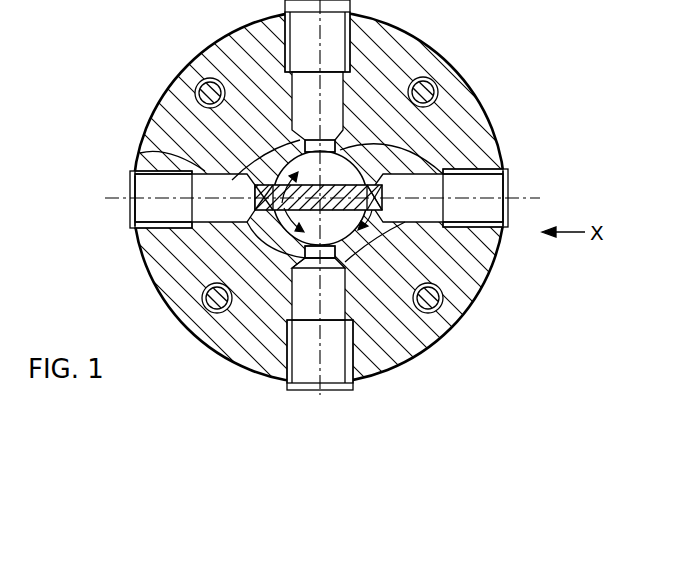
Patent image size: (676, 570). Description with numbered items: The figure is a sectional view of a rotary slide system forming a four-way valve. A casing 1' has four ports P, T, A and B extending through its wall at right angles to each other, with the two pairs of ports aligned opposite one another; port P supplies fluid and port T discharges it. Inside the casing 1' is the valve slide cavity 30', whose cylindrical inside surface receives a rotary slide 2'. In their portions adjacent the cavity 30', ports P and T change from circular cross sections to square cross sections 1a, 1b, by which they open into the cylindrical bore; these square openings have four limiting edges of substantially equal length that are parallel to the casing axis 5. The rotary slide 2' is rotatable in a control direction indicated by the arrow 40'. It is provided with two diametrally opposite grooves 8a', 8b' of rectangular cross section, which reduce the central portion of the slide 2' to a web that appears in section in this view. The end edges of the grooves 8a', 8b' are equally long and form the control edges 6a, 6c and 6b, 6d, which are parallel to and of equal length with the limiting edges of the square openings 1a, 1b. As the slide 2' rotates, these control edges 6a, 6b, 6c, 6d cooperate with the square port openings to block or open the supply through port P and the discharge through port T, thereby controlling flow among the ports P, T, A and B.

The casing 1' is at (338, 285).
The square cross section 1a is at (497, 170).
The square cross section 1b is at (143, 153).
The rotary slide 2' is at (346, 186).
The casing axis 5 is at (338, 250).
The control edge 6a is at (378, 215).
The control edge 6b is at (478, 168).
The control edge 6c is at (253, 228).
The control edge 6d is at (240, 151).
The rectangular groove 8a' is at (291, 253).
The rectangular groove 8b' is at (344, 131).
The valve slide cavity 30' is at (379, 229).
The arrow 40' is at (307, 162).
The port P is at (192, 199).
The port T is at (441, 198).
The port A is at (320, 318).
The port B is at (317, 76).